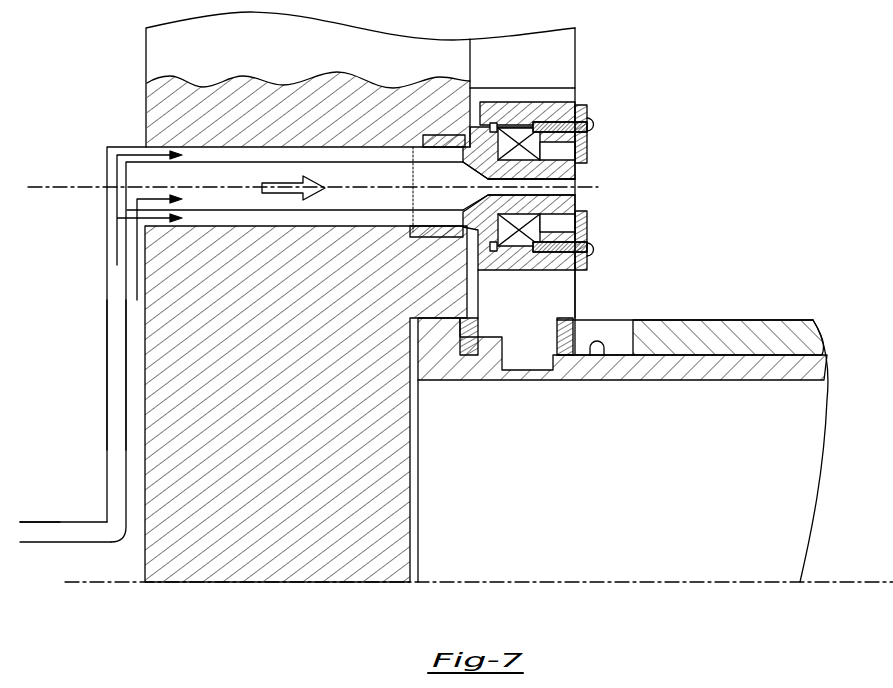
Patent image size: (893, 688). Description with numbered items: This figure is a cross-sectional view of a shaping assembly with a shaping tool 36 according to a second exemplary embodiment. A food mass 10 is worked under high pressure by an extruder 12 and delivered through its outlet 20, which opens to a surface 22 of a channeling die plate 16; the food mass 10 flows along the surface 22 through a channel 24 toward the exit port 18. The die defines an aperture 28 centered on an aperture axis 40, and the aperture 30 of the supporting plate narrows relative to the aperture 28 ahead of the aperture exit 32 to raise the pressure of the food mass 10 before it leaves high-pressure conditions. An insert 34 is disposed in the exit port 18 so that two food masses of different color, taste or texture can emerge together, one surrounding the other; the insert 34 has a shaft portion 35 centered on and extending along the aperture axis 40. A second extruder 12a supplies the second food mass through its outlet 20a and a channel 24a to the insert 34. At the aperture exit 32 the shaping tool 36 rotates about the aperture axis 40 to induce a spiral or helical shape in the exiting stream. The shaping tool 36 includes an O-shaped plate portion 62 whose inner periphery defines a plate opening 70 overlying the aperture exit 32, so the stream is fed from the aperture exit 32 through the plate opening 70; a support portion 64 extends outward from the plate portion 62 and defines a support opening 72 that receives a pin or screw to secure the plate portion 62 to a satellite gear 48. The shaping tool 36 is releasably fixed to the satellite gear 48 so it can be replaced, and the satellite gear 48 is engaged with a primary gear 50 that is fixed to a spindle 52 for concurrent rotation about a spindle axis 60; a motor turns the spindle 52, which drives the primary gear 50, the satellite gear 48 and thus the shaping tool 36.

The food mass 10 is at (265, 190).
The extruder 12 is at (135, 472).
The second extruder 12a is at (33, 538).
The channeling die plate 16 is at (155, 331).
The exit port 18 is at (195, 150).
The outlet 20 is at (101, 541).
The outlet of second extruder 20a is at (52, 522).
The surface 22 is at (140, 307).
The channel 24 is at (134, 432).
The channel of second extruder 24a is at (114, 386).
The aperture 28 is at (320, 226).
The aperture of supporting plate 30 is at (455, 160).
The aperture exit 32 is at (577, 206).
The insert 34 is at (428, 224).
The shaft portion 35 is at (486, 187).
The shaping tool 36 is at (630, 107).
The aperture axis 40 is at (99, 204).
The satellite gear 48 is at (541, 100).
The primary gear 50 is at (558, 294).
The spindle 52 is at (760, 305).
The spindle axis 60 is at (598, 580).
The plate portion 62 is at (598, 151).
The support portion 64 is at (581, 106).
The plate opening 70 is at (578, 178).
The support opening 72 is at (590, 127).